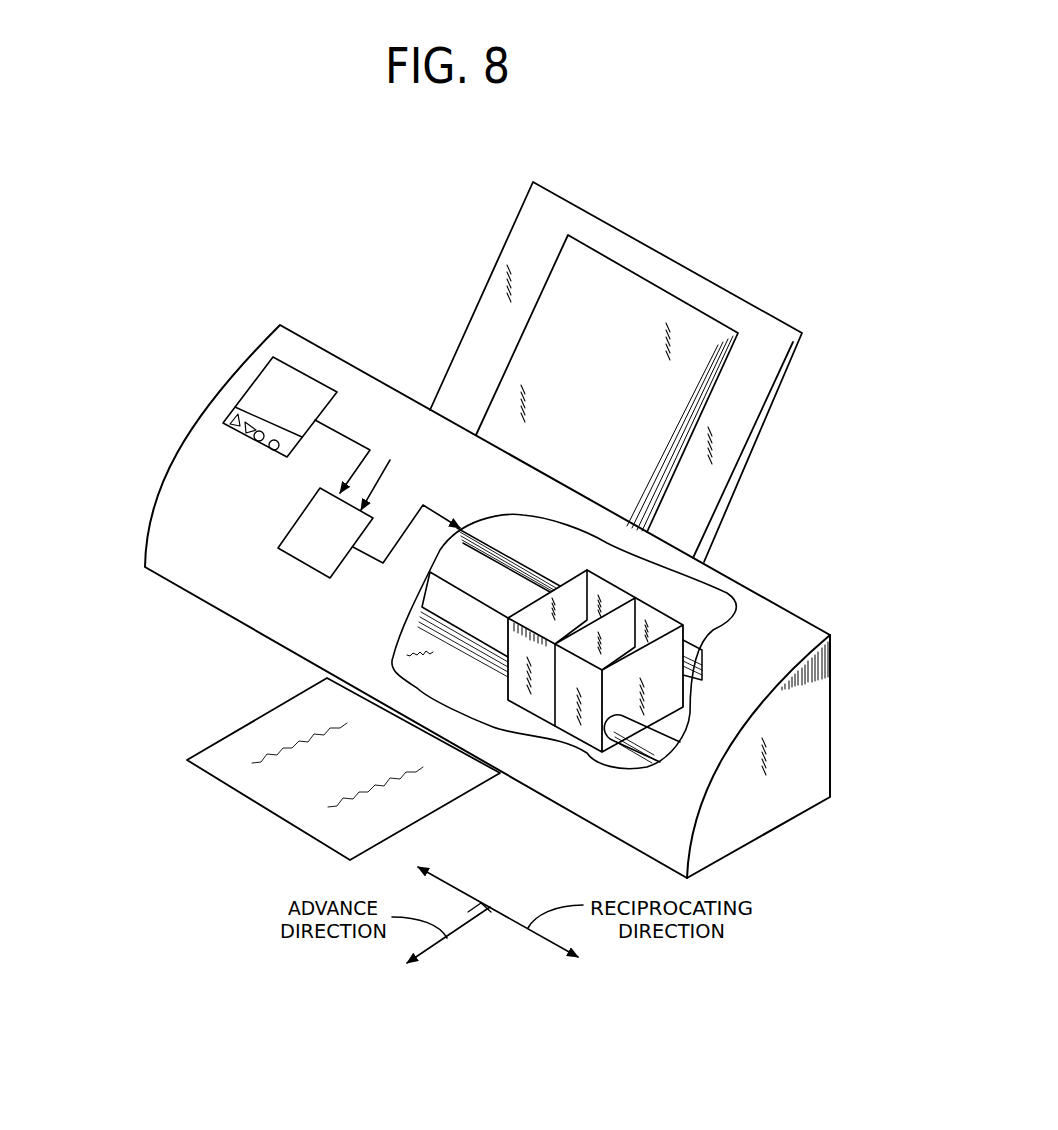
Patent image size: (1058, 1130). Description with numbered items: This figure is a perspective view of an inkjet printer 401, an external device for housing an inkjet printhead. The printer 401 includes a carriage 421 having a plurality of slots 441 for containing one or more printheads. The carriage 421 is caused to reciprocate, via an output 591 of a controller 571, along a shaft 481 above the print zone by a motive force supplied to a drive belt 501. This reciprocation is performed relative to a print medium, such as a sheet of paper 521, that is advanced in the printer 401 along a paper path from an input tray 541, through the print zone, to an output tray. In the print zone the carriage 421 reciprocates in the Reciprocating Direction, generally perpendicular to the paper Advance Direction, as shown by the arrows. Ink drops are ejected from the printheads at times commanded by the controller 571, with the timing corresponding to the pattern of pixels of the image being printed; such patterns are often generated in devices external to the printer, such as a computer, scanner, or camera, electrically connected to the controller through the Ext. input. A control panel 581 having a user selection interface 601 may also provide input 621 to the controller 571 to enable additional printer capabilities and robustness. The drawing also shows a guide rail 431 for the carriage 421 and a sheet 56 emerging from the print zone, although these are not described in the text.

The inkjet printer 401 is at (200, 345).
The control panel 581 is at (303, 377).
The user selection interface 601 is at (247, 438).
The input 621 is at (359, 465).
The controller 571 is at (298, 558).
The output of the controller 591 is at (363, 558).
The sheet of paper 521 is at (613, 388).
The input tray 541 is at (733, 408).
The slots 441 is at (602, 590).
The drive belt 501 is at (697, 660).
The carriage guide rail 431 is at (442, 665).
The carriage 421 is at (555, 725).
The shaft 481 is at (642, 748).
The recording medium 56 is at (255, 747).